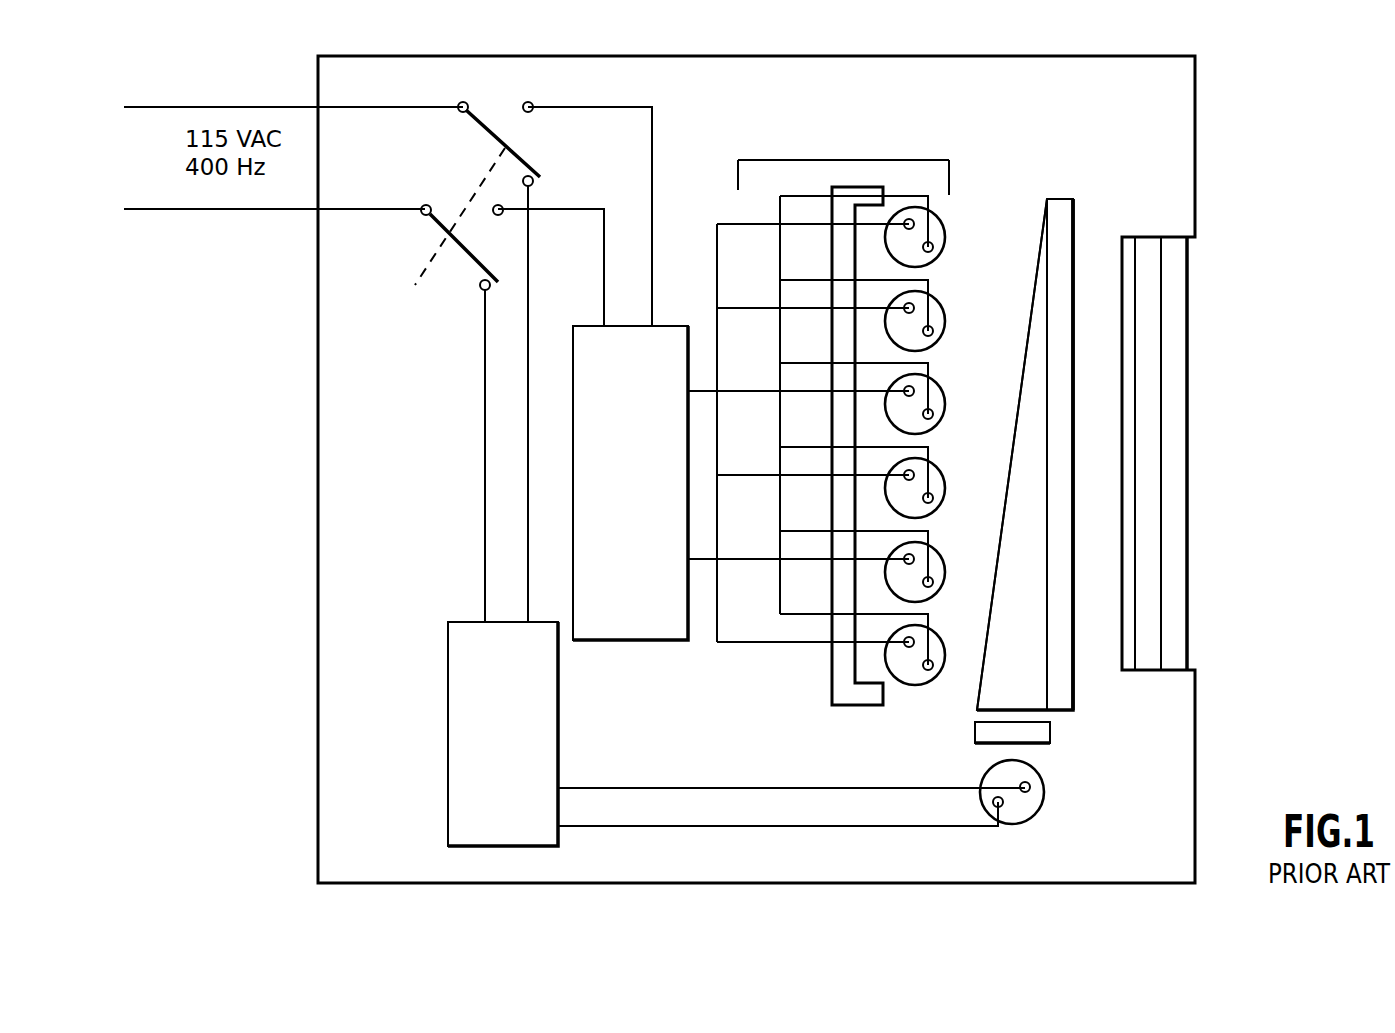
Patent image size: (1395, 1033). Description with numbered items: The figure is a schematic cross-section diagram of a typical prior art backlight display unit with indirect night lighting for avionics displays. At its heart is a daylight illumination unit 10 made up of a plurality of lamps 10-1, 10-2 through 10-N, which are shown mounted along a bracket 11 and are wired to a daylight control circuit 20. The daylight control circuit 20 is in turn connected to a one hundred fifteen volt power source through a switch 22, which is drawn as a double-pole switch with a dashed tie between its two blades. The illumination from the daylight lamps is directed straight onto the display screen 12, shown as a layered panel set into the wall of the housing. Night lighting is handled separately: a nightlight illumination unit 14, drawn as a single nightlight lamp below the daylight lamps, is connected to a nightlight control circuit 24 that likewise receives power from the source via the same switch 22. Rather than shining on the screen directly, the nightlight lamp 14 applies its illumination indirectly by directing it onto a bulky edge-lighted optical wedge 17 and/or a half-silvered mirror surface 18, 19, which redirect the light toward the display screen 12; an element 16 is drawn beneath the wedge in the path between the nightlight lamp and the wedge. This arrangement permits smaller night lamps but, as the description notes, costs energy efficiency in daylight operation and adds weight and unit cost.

The daylight illumination unit 10 is at (879, 434).
The lamp 10-1 is at (947, 232).
The lamp 10-2 is at (947, 310).
The lamp 10-N is at (922, 686).
The lamp mounting bracket 11 is at (830, 683).
The display screen 12 is at (1150, 244).
The nightlight illumination unit 14 is at (1040, 812).
The light sensor 16 is at (1050, 737).
The edge lighted optical wedge 17 is at (1017, 677).
The half-silvered mirror surface 18 is at (1020, 405).
The half-silvered mirror surface 19 is at (1074, 698).
The daylight control circuit 20 is at (647, 468).
The switch 22 is at (442, 272).
The nightlight control circuit 24 is at (518, 742).